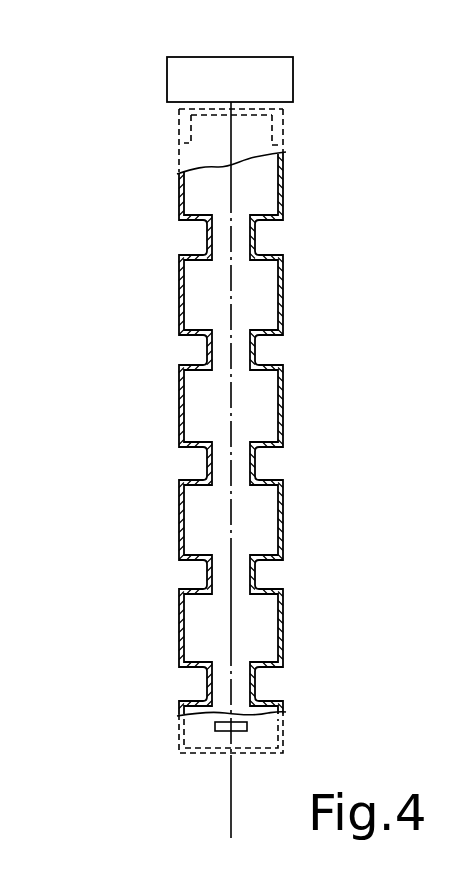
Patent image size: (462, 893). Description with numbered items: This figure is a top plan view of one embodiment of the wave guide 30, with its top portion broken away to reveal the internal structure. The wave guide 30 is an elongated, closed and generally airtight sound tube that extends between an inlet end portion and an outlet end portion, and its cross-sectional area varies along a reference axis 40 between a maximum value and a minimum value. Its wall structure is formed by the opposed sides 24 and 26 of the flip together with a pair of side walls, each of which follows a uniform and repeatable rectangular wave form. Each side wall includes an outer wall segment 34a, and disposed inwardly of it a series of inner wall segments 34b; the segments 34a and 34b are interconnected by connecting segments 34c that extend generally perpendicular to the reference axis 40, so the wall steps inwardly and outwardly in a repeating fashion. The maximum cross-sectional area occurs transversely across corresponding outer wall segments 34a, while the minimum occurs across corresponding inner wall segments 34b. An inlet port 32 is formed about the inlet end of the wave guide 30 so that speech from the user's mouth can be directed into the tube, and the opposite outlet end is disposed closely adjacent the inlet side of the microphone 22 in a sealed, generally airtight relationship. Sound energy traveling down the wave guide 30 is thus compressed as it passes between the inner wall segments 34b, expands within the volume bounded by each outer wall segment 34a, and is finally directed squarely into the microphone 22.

The microphone 22 is at (266, 57).
The side of the flip 24 is at (253, 133).
The side of the flip 26 is at (260, 410).
The wave guide 30 is at (296, 417).
The inlet port 32 is at (238, 733).
The outer wall segment 34a is at (183, 279).
The inner wall segment 34b is at (207, 352).
The connecting segment 34c is at (197, 327).
The reference axis 40 is at (231, 808).